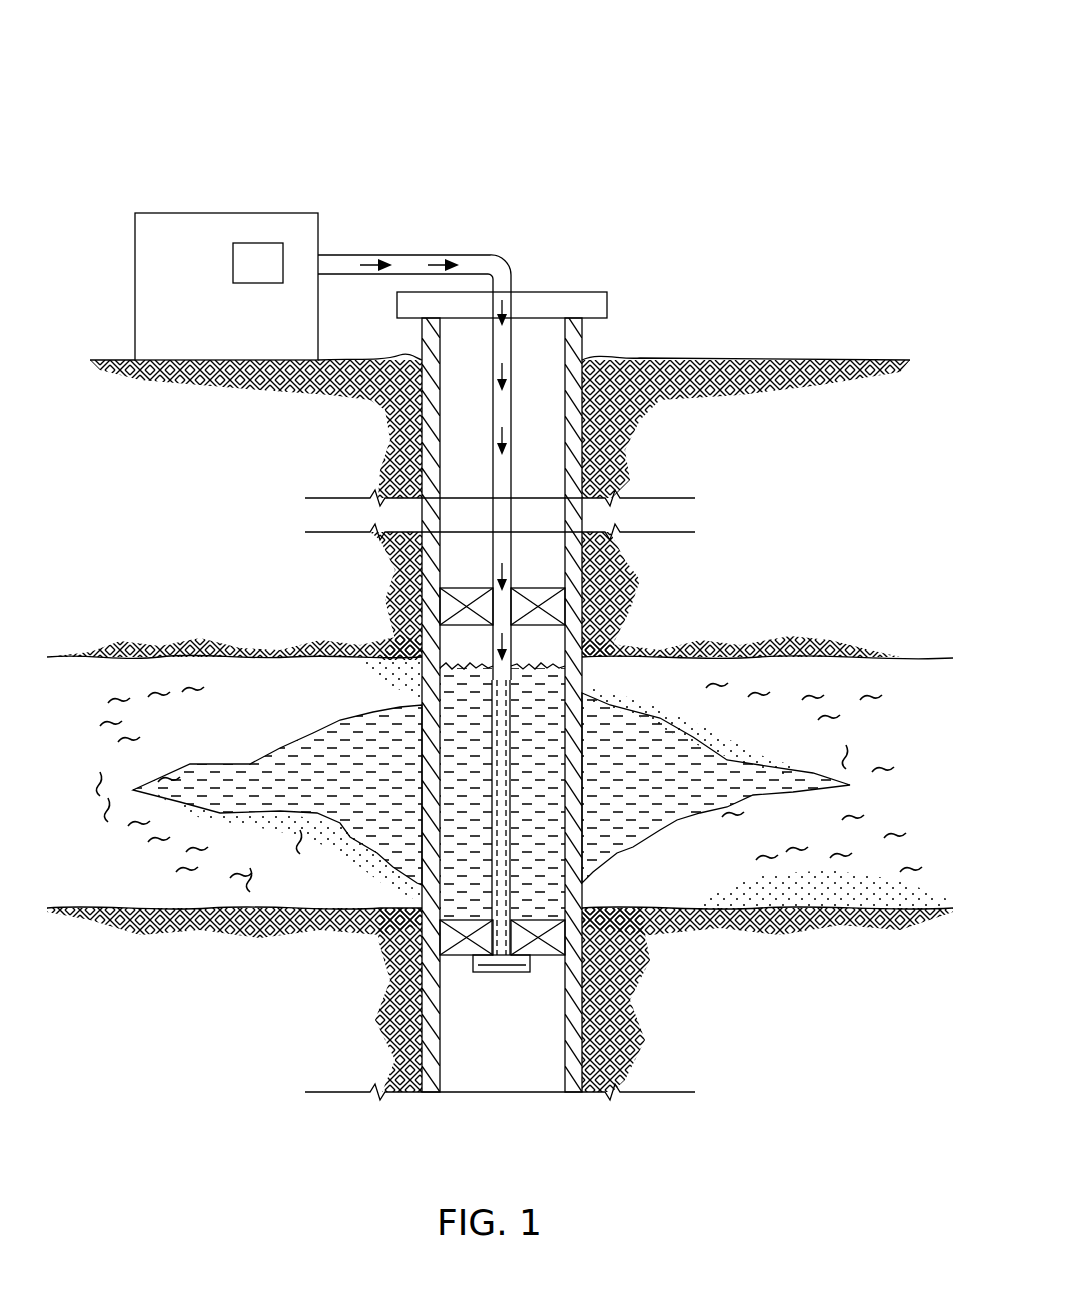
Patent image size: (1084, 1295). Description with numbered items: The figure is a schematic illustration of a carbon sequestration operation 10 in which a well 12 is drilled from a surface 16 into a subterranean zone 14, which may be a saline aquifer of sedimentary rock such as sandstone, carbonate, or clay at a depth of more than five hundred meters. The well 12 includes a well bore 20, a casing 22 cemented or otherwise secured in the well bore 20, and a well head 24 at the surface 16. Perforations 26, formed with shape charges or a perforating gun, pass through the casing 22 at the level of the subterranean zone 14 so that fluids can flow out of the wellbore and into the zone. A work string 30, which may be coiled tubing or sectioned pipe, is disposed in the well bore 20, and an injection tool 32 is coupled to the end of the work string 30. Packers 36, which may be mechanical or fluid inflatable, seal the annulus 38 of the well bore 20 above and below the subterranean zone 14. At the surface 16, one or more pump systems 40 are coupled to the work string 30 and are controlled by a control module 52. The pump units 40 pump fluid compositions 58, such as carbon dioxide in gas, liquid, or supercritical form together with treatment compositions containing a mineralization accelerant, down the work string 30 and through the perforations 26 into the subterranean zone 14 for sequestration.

The carbon sequestration operation 10 is at (838, 82).
The well 12 is at (541, 233).
The subterranean zone 14 is at (867, 722).
The surface 16 is at (648, 362).
The well bore 20 is at (565, 392).
The casing 22 is at (440, 413).
The well head 24 is at (565, 292).
The perforations 26 is at (398, 705).
The work string 30 is at (510, 560).
The injection tool 32 is at (420, 882).
The packers 36 is at (553, 627).
The annulus 38 is at (552, 467).
The pump systems 40 is at (135, 310).
The control module 52 is at (258, 243).
The fluid compositions 58 is at (360, 256).